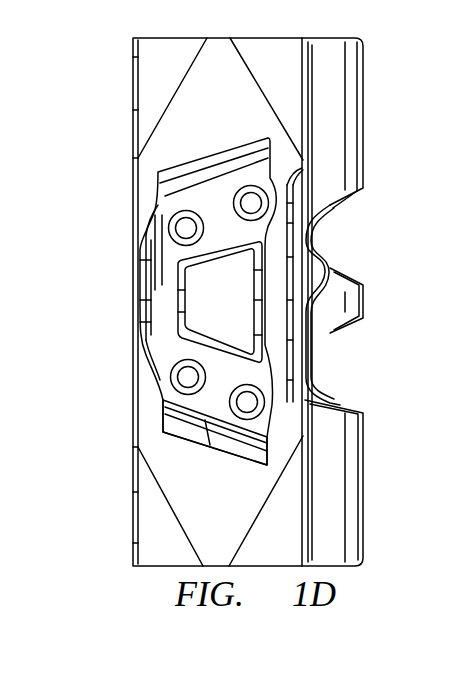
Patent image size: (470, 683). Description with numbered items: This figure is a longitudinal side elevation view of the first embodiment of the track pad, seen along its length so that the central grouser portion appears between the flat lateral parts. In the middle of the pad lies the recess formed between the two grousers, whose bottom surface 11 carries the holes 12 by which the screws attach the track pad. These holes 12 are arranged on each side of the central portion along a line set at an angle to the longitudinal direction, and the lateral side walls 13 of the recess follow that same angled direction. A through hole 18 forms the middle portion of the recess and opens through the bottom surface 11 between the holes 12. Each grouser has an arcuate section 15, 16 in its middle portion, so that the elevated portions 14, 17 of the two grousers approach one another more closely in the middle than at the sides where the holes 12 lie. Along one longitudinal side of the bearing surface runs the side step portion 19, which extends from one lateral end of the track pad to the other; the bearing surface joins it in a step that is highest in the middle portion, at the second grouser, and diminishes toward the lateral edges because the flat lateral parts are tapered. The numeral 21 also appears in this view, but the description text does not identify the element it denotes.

The bottom surface 11 is at (246, 220).
The holes 12 is at (248, 198).
The lateral side walls 13 is at (201, 443).
The elevated portion 14 is at (150, 298).
The arcuate section 15 is at (147, 262).
The arcuate section 16 is at (292, 290).
The elevated portion 17 is at (320, 262).
The through hole 18 is at (142, 337).
The side step portion 19 is at (343, 82).
The channel inner wall 21 is at (357, 127).